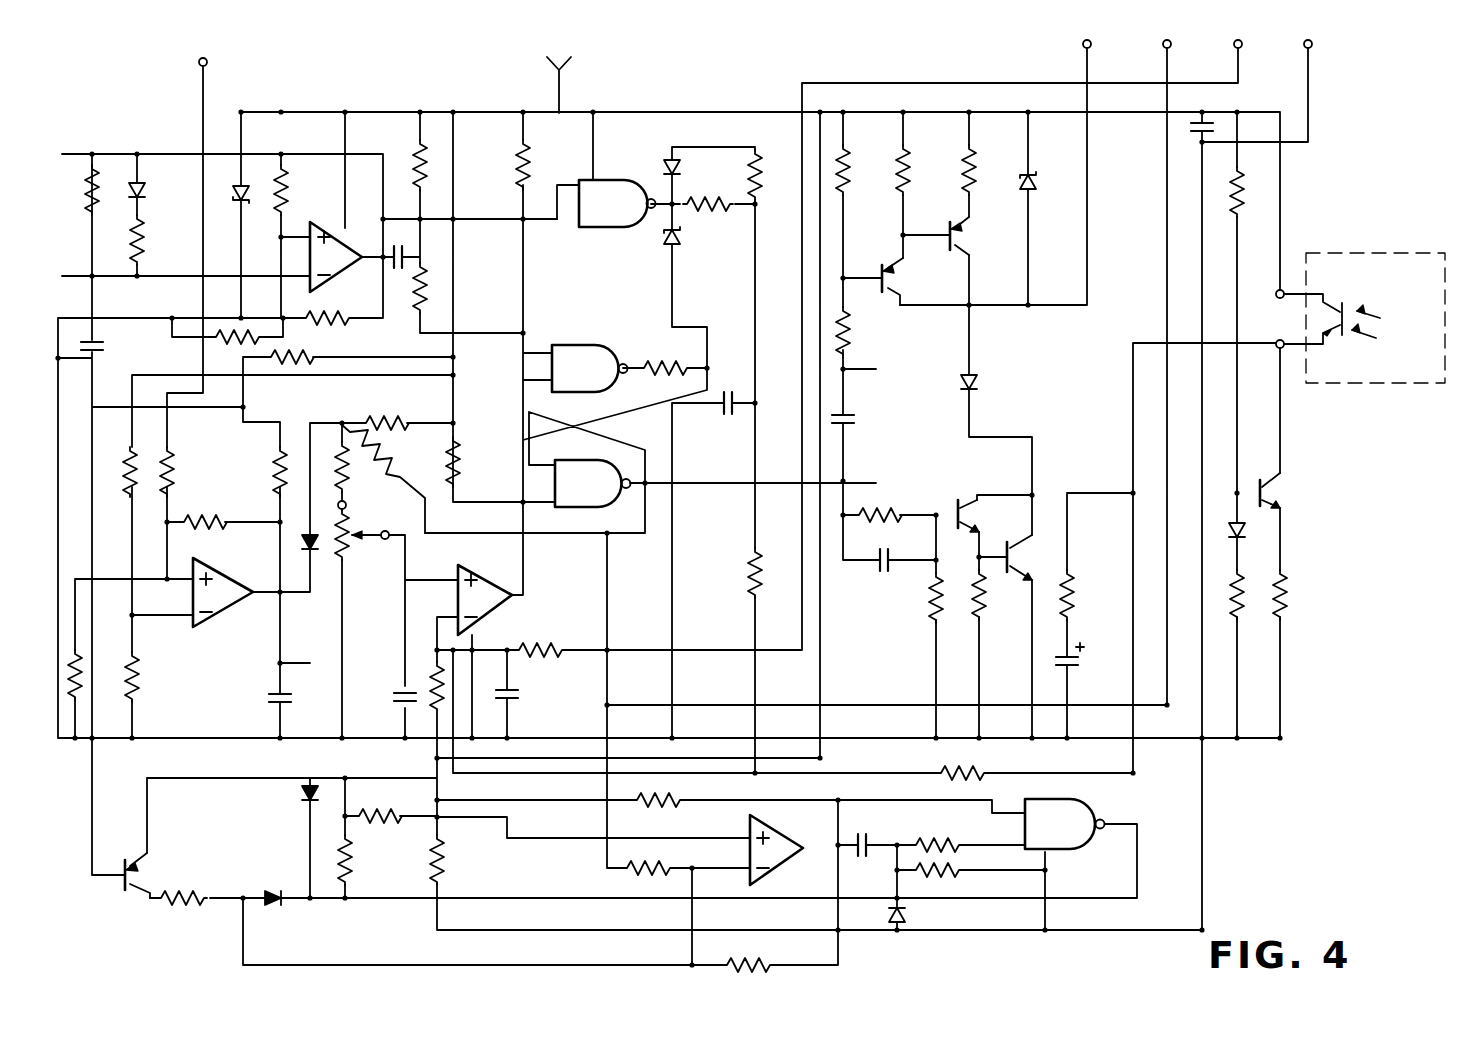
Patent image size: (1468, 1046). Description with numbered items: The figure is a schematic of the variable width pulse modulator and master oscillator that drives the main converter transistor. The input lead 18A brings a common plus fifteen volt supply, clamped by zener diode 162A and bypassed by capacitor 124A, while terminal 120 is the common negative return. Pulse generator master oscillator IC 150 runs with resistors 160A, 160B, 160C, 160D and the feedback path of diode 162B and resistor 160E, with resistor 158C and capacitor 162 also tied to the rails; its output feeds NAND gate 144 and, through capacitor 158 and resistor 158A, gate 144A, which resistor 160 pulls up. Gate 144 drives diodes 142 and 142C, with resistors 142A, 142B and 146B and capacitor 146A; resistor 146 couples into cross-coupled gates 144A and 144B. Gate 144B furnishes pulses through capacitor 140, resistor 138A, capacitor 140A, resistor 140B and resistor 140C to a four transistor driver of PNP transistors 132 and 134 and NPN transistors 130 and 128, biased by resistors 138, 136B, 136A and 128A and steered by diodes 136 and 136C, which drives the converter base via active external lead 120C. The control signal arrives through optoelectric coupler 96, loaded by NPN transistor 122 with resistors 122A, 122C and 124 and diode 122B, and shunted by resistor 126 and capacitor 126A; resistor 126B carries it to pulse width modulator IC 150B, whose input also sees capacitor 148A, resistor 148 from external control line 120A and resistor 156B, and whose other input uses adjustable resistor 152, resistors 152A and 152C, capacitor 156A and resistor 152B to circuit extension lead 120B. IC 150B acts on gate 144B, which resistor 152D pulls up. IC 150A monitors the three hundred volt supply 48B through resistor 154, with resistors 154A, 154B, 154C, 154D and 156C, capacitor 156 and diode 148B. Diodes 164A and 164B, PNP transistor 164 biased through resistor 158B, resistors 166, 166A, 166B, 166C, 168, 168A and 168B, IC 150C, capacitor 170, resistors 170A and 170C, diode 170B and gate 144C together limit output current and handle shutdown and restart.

The positive 300 volt DC supply 48B is at (207, 59).
The input lead 18A is at (548, 63).
The optoelectric coupler 96 is at (1411, 366).
The terminal 120 is at (1303, 46).
The external control line 120A is at (1238, 48).
The circuit extension lead 120B is at (1162, 46).
The active external lead 120C is at (1082, 46).
The NPN transistor 122 is at (1268, 488).
The resistor 122A is at (1285, 582).
The diode 122B is at (1245, 530).
The resistor 122C is at (1244, 612).
The resistor 124 is at (1242, 185).
The capacitor 124A is at (1212, 118).
The resistor 126 is at (1074, 590).
The capacitor 126A is at (1072, 668).
The resistor 126B is at (982, 772).
The NPN transistor 128 is at (1018, 545).
The resistor 128A is at (985, 603).
The NPN transistor 130 is at (968, 496).
The PNP transistor 132 is at (895, 262).
The PNP transistor 134 is at (962, 222).
The diode 136 is at (1018, 185).
The resistor 136A is at (973, 152).
The resistor 136B is at (908, 152).
The diode 136C is at (978, 380).
The resistor 138 is at (846, 150).
The resistor 138A is at (850, 330).
The capacitor 140 is at (850, 412).
The capacitor 140A is at (878, 568).
The resistor 140B is at (902, 522).
The resistor 140C is at (932, 612).
The diode 142 is at (667, 162).
The resistor 142A is at (745, 180).
The resistor 142B is at (712, 210).
The diode 142C is at (668, 245).
The NAND gate 144 is at (640, 228).
The NAND gate 144A is at (605, 388).
The NAND gate 144B is at (612, 462).
The NAND gate 144C is at (1070, 802).
The resistor 146 is at (685, 360).
The capacitor 146A is at (740, 390).
The resistor 146B is at (748, 582).
The resistor 148 is at (562, 642).
The capacitor 148A is at (513, 688).
The diode 148B is at (315, 555).
The pulse generator master oscillator IC 150 is at (352, 262).
The IC 150A is at (226, 572).
The IC 150B is at (495, 580).
The IC 150C is at (785, 862).
The adjustable resistor 152 is at (348, 532).
The resistor 152A is at (346, 490).
The resistor 152B is at (392, 462).
The resistor 152C is at (398, 418).
The resistor 152D is at (462, 452).
The resistor 154 is at (170, 487).
The resistor 154A is at (240, 507).
The resistor 154B is at (278, 450).
The resistor 154C is at (138, 455).
The resistor 154D is at (137, 660).
The capacitor 156 is at (268, 700).
The capacitor 156A is at (395, 693).
The resistor 156B is at (430, 672).
The resistor 156C is at (82, 670).
The capacitor 158 is at (406, 255).
The resistor 158A is at (426, 290).
The resistor 158B is at (312, 360).
The resistor 158C is at (414, 160).
The resistor 160 is at (520, 155).
The resistor 160A is at (284, 196).
The resistor 160B is at (96, 167).
The resistor 160C is at (352, 303).
The resistor 160D is at (210, 342).
The resistor 160E is at (143, 246).
The capacitor 162 is at (108, 344).
The zener diode 162A is at (236, 186).
The diode 162B is at (144, 197).
The PNP transistor 164 is at (135, 858).
The diode 164A is at (302, 794).
The diode 164B is at (285, 892).
The resistor 166 is at (180, 910).
The resistor 166A is at (352, 853).
The resistor 166B is at (432, 872).
The resistor 166C is at (400, 812).
The resistor 168 is at (738, 960).
The resistor 168A is at (625, 872).
The resistor 168B is at (680, 802).
The capacitor 170 is at (885, 818).
The resistor 170A is at (952, 838).
The diode 170B is at (890, 917).
The resistor 170C is at (940, 875).